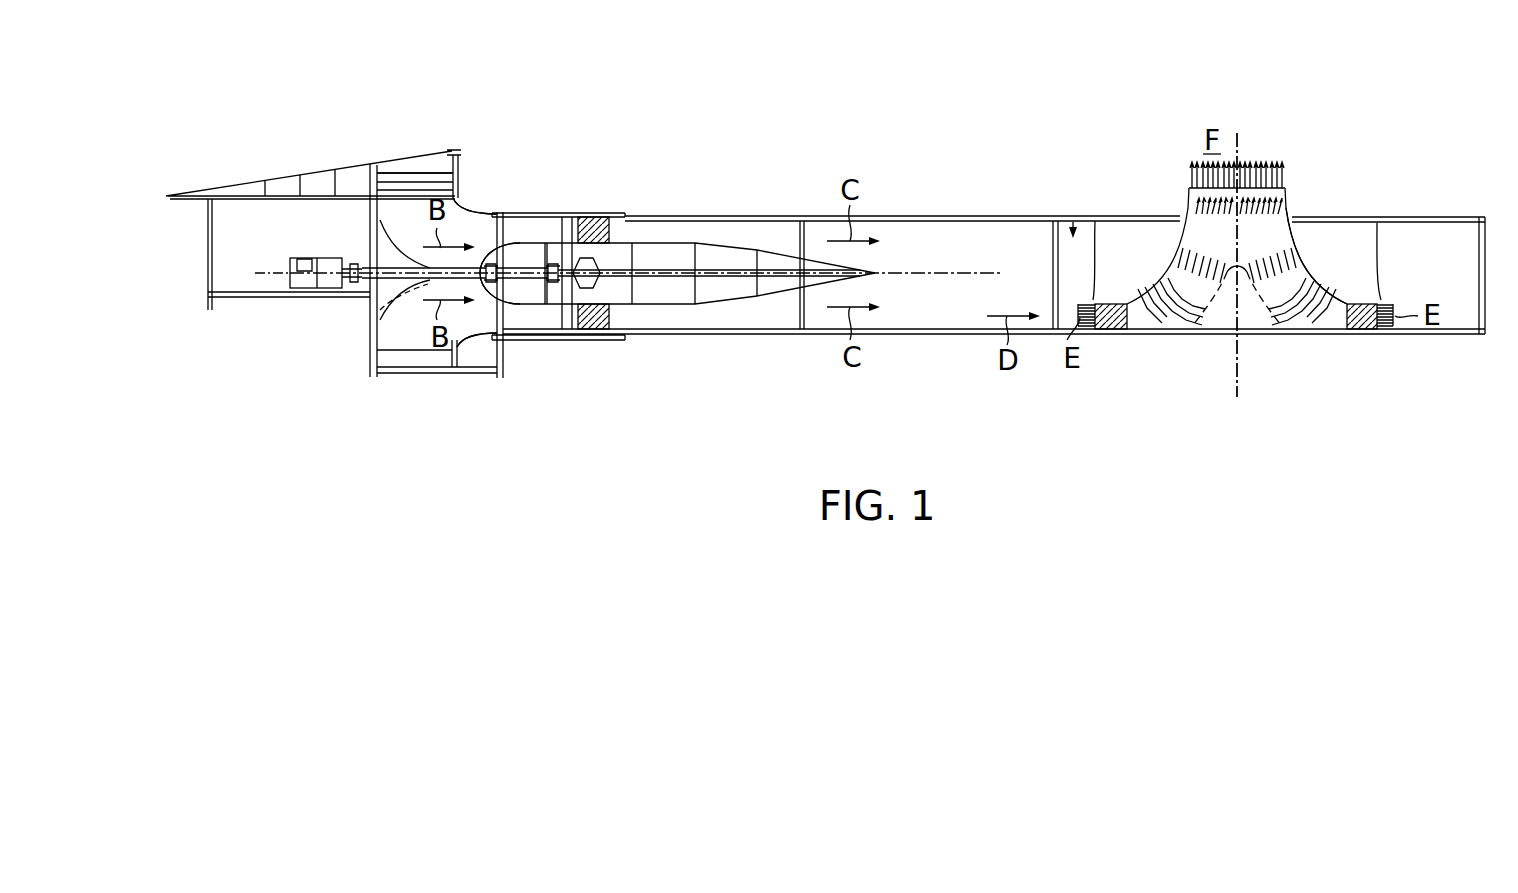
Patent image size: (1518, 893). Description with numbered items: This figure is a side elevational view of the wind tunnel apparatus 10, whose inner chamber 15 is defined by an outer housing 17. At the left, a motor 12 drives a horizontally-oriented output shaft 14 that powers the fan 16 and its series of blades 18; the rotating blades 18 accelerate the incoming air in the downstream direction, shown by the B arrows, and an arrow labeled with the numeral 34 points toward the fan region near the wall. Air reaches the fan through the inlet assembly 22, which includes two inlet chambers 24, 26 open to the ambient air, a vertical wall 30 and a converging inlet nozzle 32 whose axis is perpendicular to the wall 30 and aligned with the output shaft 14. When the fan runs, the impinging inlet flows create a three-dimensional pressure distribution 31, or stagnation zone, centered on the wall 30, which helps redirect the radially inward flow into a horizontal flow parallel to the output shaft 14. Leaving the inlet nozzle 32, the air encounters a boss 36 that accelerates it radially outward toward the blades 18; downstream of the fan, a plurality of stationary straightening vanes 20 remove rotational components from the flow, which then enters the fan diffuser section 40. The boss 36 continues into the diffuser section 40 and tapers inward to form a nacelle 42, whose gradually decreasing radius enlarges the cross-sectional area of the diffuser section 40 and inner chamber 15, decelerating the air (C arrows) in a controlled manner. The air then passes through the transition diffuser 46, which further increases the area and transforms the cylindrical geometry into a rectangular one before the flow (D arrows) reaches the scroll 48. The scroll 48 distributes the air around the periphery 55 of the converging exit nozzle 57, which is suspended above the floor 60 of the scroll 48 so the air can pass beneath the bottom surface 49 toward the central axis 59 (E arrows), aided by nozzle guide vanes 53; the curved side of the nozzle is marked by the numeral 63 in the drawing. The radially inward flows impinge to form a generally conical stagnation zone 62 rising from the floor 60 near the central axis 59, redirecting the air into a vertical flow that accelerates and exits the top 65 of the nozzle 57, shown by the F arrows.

The apparatus 10 is at (848, 96).
The motor 12 is at (322, 258).
The output shaft 14 is at (427, 267).
The inner chamber 15 is at (984, 236).
The fan 16 is at (594, 250).
The outer housing 17 is at (963, 216).
The blades 18 is at (563, 317).
The straightening vanes 20 is at (613, 232).
The inlet assembly 22 is at (474, 154).
The inlet chamber 24 is at (477, 211).
The inlet chamber 26 is at (485, 360).
The vertical wall 30 is at (392, 192).
The pressure distribution 31 is at (380, 257).
The converging inlet nozzle 32 is at (490, 216).
The fan 34 is at (414, 296).
The boss 36 is at (515, 240).
The fan diffuser section 40 is at (762, 325).
The nacelle 42 is at (718, 252).
The transition diffuser 46 is at (927, 226).
The scroll 48 is at (1073, 222).
The bottom surface 49 is at (1383, 301).
The nozzle guide vanes 53 is at (1108, 302).
The periphery 55 is at (1090, 302).
The converging exit nozzle 57 is at (1174, 234).
The central axis 59 is at (1237, 383).
The floor 60 is at (1255, 323).
The stagnation zone 62 is at (1213, 320).
The chimney wall 63 is at (1300, 258).
The top 65 is at (1284, 184).